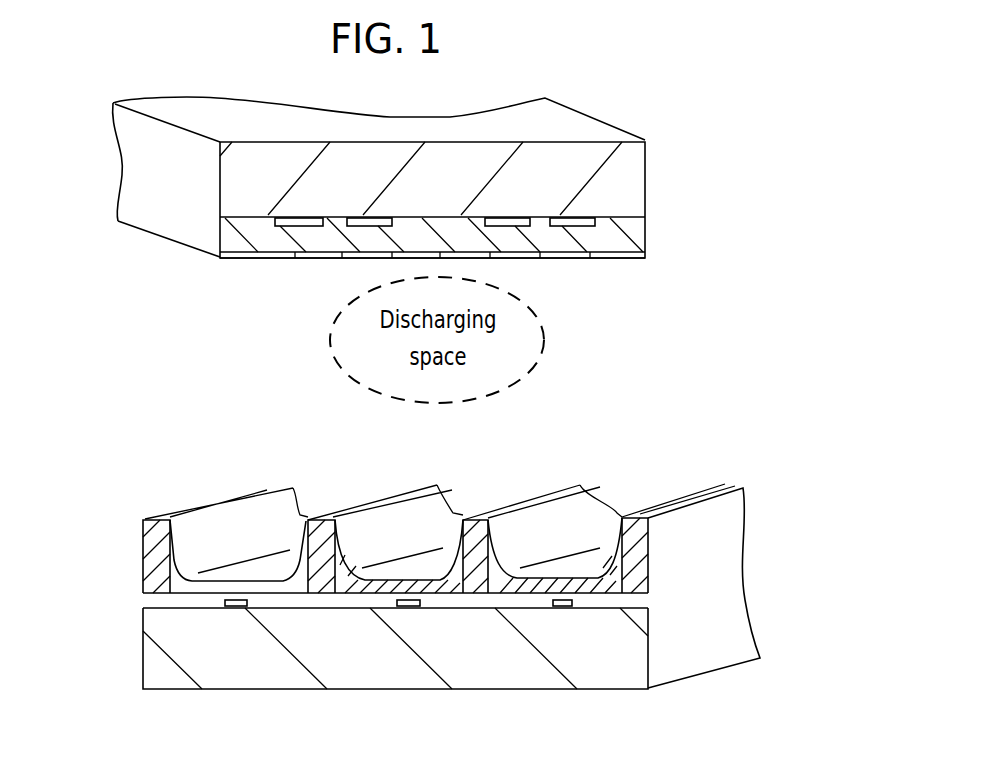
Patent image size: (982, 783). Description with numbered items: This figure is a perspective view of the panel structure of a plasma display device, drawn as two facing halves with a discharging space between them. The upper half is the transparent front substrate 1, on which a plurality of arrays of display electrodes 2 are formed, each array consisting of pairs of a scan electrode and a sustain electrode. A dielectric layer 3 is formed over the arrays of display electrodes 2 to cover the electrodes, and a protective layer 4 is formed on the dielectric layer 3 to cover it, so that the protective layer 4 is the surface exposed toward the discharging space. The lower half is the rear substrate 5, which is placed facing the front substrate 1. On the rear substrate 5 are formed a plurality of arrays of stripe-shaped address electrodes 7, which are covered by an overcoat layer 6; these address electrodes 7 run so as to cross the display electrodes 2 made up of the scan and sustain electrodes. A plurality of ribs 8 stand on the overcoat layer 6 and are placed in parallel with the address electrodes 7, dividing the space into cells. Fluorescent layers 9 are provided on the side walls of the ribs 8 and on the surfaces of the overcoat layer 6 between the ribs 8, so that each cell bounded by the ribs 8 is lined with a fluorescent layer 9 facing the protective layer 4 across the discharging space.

The front substrate 1 is at (255, 193).
The display electrodes 2 is at (570, 224).
The dielectric layer 3 is at (615, 232).
The protective layer 4 is at (298, 253).
The rear substrate 5 is at (536, 682).
The overcoat layer 6 is at (465, 600).
The address electrodes 7 is at (243, 607).
The ribs 8 is at (155, 540).
The fluorescent layers 9 is at (193, 590).